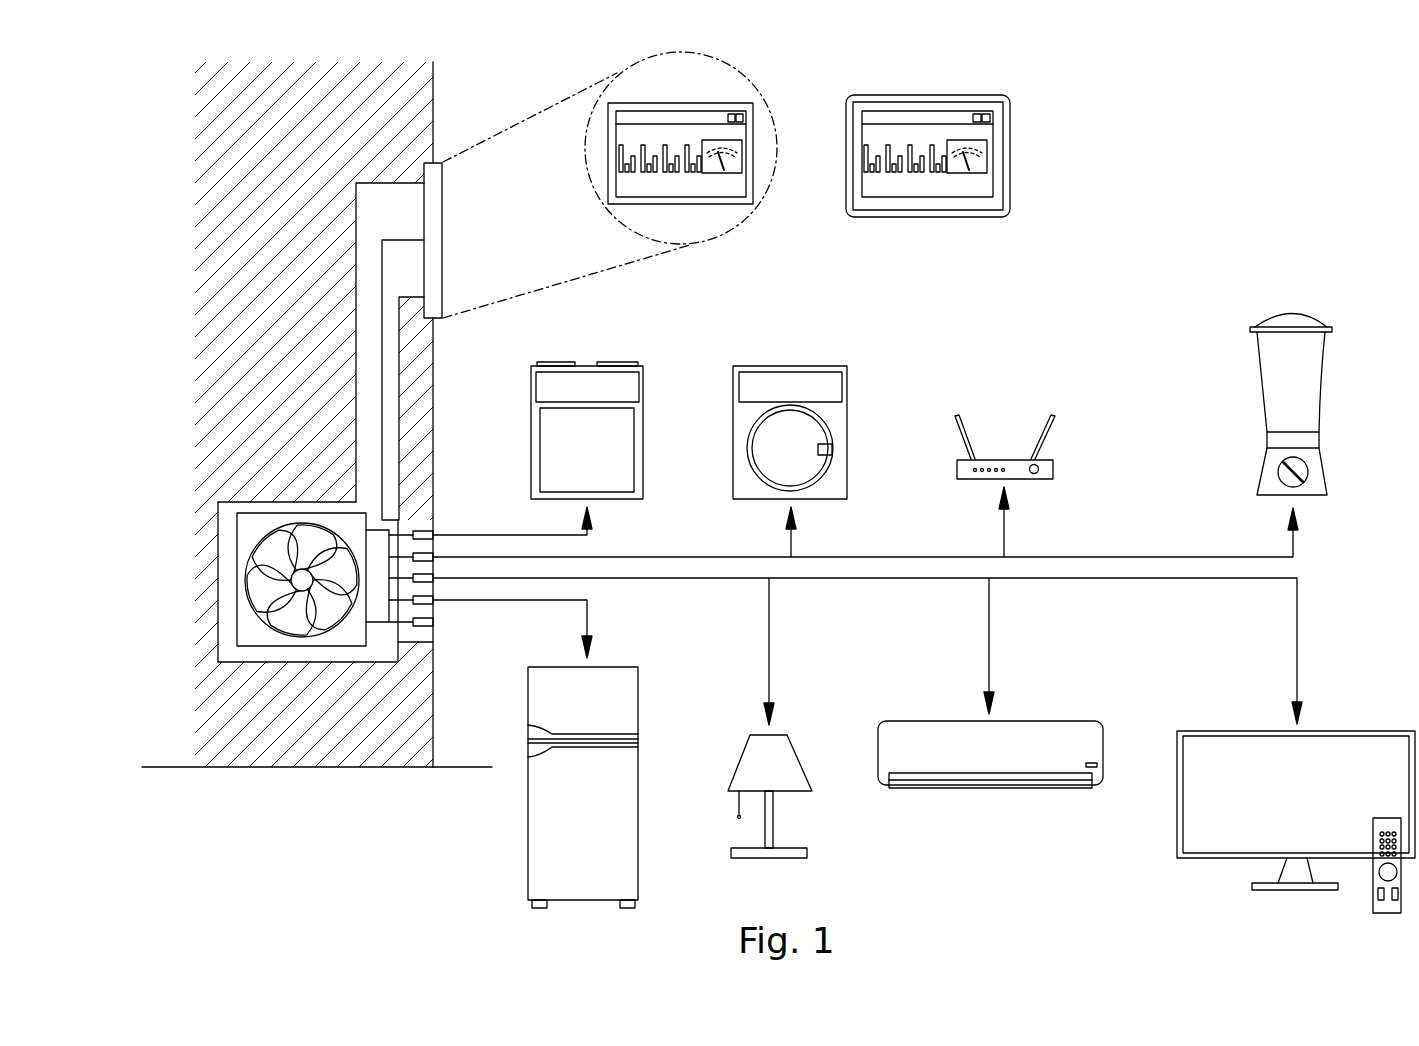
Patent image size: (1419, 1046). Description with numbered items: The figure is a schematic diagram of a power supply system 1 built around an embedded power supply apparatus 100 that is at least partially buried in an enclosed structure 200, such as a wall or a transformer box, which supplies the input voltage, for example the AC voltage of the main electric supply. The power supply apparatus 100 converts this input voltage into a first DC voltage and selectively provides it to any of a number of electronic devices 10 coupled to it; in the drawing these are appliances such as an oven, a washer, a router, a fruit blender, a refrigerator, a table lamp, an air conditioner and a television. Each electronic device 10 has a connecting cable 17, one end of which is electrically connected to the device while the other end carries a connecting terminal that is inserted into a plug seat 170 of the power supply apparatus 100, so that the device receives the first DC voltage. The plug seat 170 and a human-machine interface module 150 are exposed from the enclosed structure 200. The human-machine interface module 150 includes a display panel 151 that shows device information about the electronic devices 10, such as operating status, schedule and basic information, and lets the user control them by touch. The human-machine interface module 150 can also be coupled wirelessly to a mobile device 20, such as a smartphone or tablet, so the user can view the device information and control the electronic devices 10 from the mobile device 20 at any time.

The power supply system 1 is at (1335, 85).
The electronic devices 10 is at (618, 366).
The connecting cable 17 is at (587, 543).
The mobile device 20 is at (882, 100).
The power supply apparatus 100 is at (228, 507).
The human-machine interface module 150 is at (433, 253).
The display panel 151 is at (718, 107).
The plug seat 170 is at (432, 530).
The enclosed structure 200 is at (298, 768).